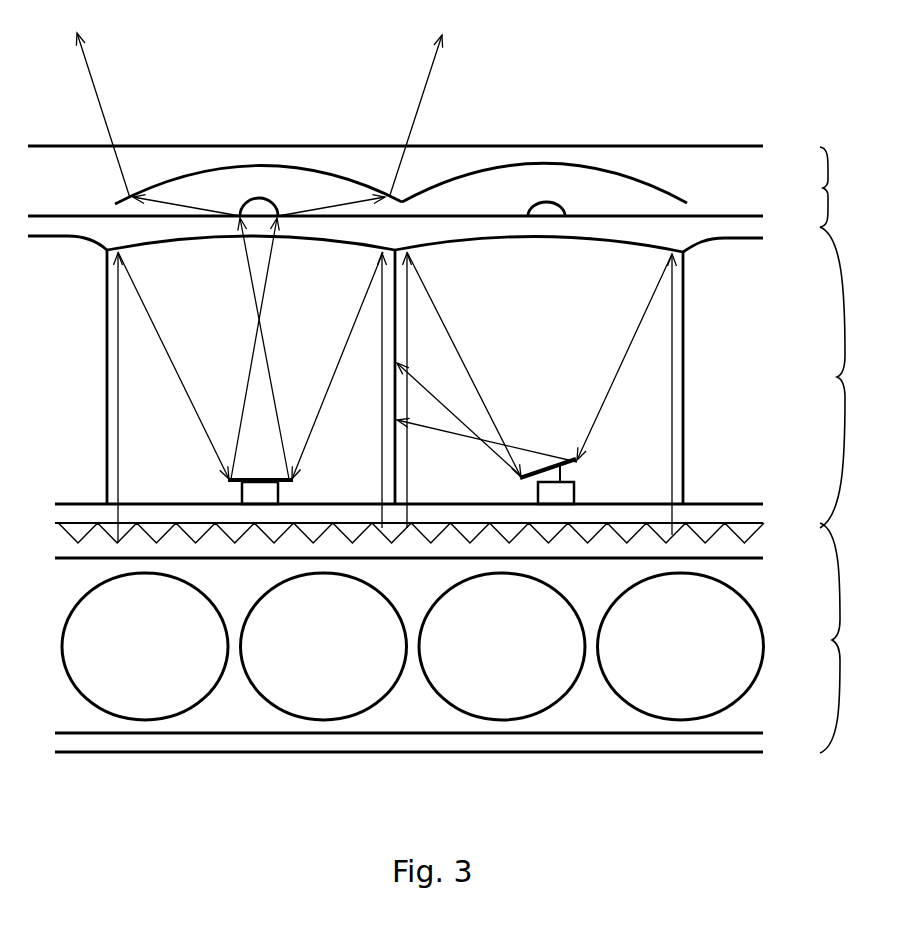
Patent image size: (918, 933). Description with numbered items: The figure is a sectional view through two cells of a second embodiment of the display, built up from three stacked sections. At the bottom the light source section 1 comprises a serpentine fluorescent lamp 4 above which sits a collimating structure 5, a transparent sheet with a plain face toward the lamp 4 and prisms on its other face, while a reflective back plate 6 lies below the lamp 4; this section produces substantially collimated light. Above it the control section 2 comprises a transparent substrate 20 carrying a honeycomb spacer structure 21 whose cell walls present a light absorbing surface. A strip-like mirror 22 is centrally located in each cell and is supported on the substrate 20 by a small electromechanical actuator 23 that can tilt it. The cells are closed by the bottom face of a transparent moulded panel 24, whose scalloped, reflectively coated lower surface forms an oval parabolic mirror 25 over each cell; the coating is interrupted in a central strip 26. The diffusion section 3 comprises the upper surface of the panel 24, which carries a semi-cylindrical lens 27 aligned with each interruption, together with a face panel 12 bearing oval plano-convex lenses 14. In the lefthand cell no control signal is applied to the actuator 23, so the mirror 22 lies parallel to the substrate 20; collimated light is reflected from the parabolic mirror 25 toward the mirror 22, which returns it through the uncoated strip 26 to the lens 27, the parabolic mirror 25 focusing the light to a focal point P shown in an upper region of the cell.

The light source section 1 is at (842, 638).
The control section 2 is at (845, 377).
The diffusion section 3 is at (837, 187).
The serpentine fluorescent lamp 4 is at (273, 683).
The collimating structure 5 is at (753, 554).
The reflective back plate 6 is at (260, 752).
The face panel 12 is at (726, 170).
The plano-convex lenses 14 is at (270, 158).
The transparent substrate 20 is at (78, 514).
The honeycomb spacer structure 21 is at (105, 357).
The strip-like mirror 22 is at (235, 477).
The electromechanical actuator 23 is at (262, 494).
The panel 24 is at (93, 226).
The oval parabolic mirror 25 is at (357, 240).
The uncoated central strip 26 is at (262, 228).
The semi-cylindrical lens 27 is at (258, 200).
The focal point P is at (260, 312).